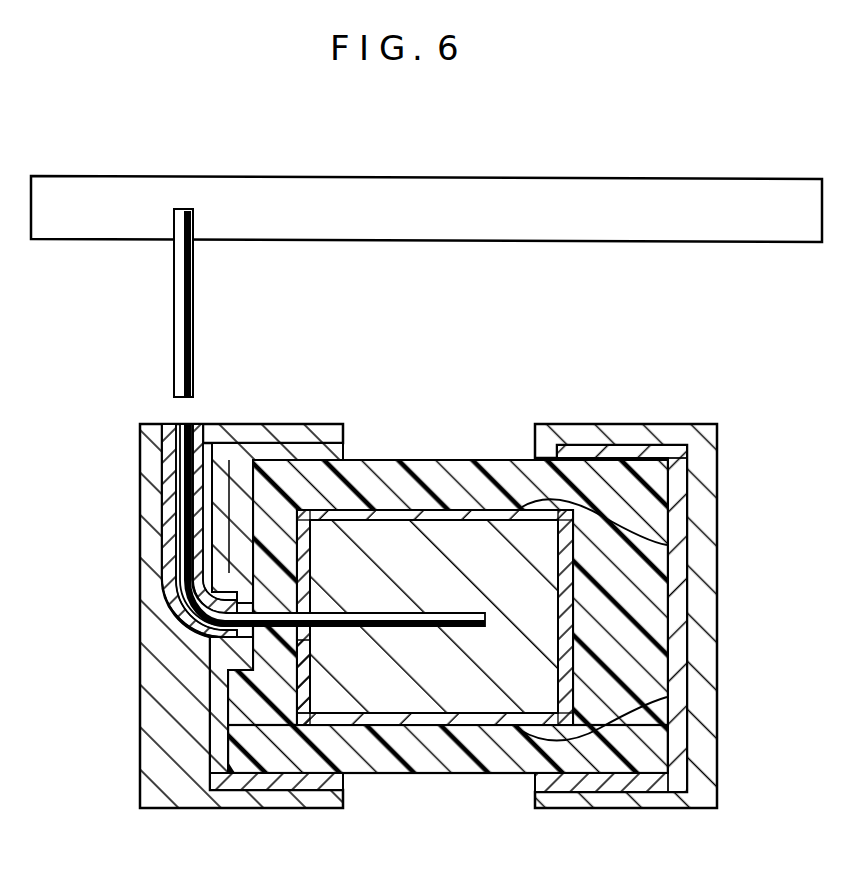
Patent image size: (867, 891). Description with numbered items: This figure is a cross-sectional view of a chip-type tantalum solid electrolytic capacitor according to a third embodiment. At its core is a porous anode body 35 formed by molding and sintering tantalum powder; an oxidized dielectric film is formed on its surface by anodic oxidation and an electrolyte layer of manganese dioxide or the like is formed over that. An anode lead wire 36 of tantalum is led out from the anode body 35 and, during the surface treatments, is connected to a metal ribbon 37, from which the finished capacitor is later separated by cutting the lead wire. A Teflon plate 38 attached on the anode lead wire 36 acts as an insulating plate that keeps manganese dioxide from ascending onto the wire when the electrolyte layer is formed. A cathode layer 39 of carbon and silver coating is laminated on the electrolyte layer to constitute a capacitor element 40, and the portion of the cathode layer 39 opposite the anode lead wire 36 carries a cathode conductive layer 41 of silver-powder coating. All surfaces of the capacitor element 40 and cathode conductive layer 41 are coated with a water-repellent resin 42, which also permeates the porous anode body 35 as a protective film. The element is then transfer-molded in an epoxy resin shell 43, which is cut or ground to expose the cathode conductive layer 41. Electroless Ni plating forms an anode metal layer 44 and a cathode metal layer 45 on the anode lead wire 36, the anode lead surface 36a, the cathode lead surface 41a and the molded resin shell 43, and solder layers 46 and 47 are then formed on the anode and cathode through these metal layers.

The porous anode body 35 is at (452, 545).
The anode lead wire 36 is at (192, 310).
The anode lead surface 36a is at (208, 727).
The metal ribbon 37 is at (90, 239).
The Teflon plate 38 is at (305, 690).
The cathode layer 39 is at (403, 512).
The capacitor element 40 is at (500, 545).
The cathode conductive layer 41 is at (668, 596).
The cathode lead surface 41a is at (690, 655).
The water-repellent resin 42 is at (356, 498).
The resin shell 43 is at (480, 763).
The anode metal layer 44 is at (182, 624).
The cathode metal layer 45 is at (690, 773).
The solder layer 46 is at (150, 493).
The solder layer 47 is at (712, 722).